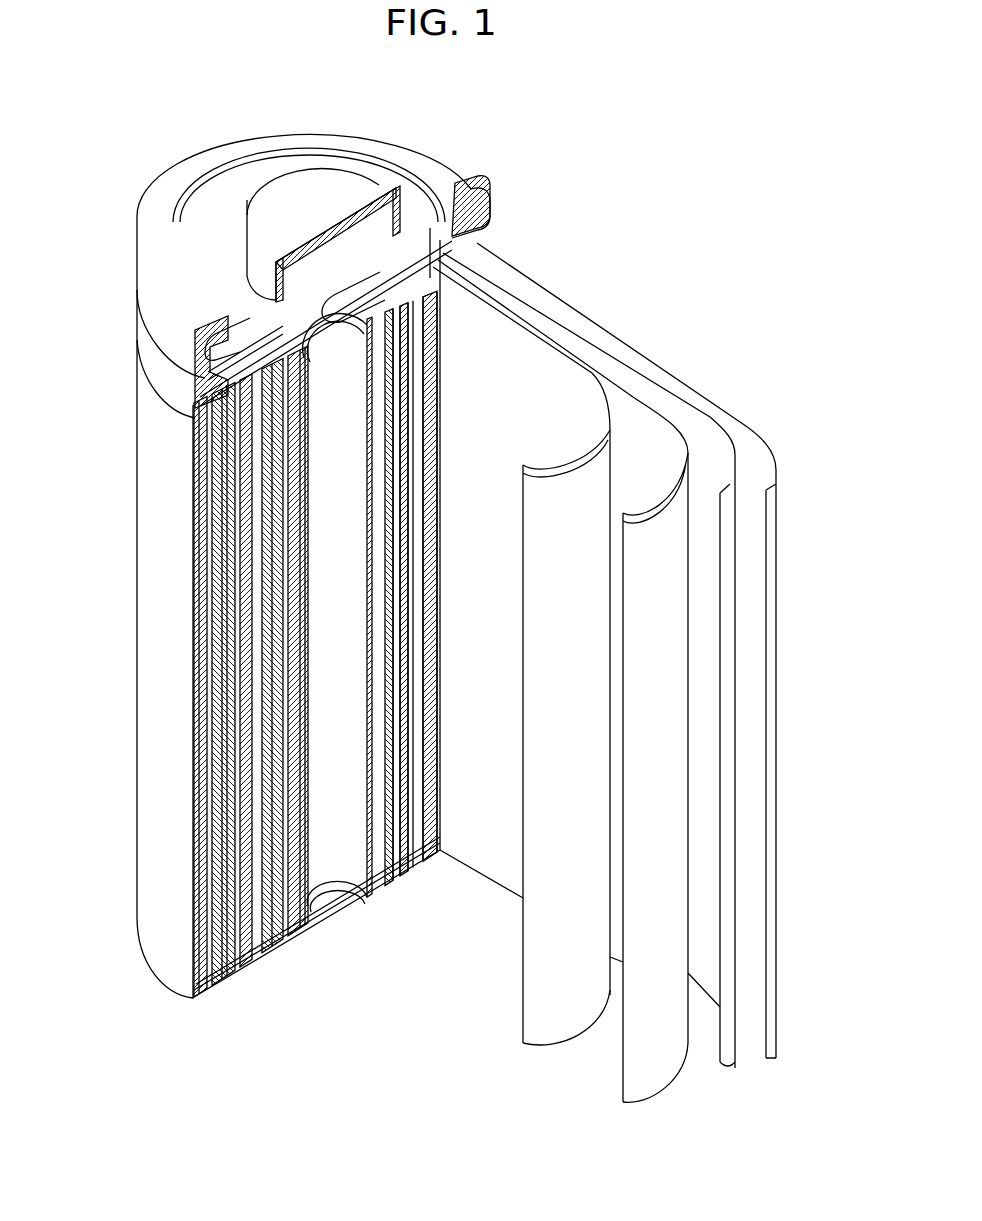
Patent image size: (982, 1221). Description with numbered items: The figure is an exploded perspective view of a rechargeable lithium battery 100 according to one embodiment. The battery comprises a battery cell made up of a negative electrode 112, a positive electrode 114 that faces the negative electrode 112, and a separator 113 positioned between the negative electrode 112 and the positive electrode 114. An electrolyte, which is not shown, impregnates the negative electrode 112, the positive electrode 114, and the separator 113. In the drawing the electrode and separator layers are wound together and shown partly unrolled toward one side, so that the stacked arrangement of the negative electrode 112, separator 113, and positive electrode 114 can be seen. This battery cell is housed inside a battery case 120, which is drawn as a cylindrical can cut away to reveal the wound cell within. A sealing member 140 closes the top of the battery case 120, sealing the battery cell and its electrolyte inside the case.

The rechargeable lithium battery 100 is at (461, 148).
The negative electrode 112 is at (768, 454).
The separator 113 is at (510, 310).
The positive electrode 114 is at (640, 396).
The battery case 120 is at (160, 674).
The sealing member 140 is at (300, 186).